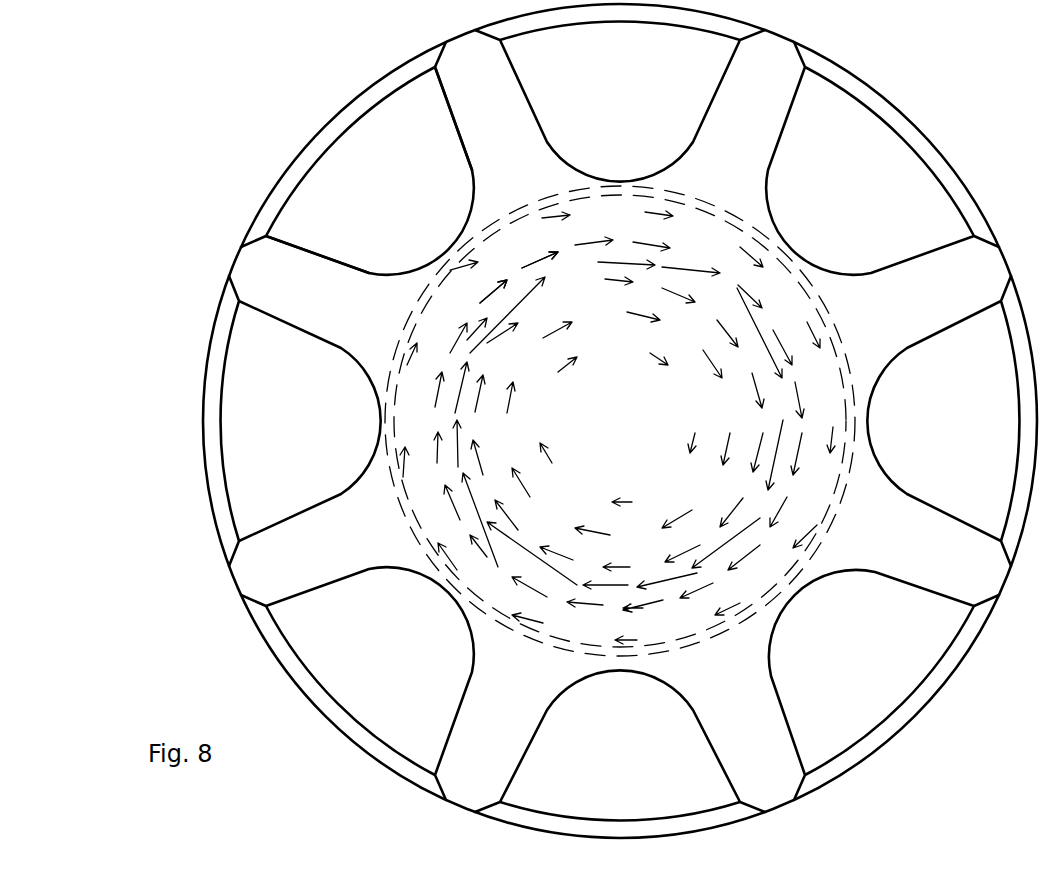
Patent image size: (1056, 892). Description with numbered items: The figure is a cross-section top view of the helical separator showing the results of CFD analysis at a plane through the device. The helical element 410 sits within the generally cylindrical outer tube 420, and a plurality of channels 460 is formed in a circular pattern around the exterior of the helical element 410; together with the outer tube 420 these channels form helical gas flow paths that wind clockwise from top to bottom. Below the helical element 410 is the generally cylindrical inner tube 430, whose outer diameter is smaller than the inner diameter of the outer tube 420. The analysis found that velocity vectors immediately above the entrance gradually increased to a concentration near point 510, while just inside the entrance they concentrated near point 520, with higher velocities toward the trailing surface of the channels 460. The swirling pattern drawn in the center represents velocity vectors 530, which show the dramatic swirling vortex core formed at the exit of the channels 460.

The helical element 410 is at (644, 436).
The outer tube 420 is at (927, 132).
The inner tube 430 is at (740, 220).
The channels 460 is at (410, 209).
The point 510 is at (427, 167).
The point 520 is at (372, 237).
The velocity vectors 530 is at (555, 272).